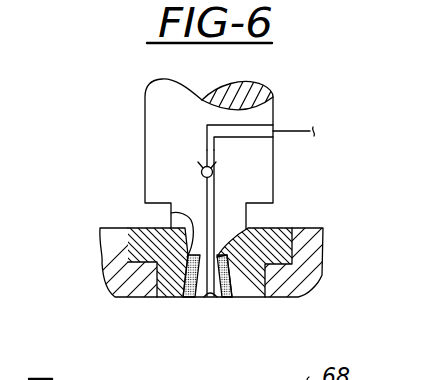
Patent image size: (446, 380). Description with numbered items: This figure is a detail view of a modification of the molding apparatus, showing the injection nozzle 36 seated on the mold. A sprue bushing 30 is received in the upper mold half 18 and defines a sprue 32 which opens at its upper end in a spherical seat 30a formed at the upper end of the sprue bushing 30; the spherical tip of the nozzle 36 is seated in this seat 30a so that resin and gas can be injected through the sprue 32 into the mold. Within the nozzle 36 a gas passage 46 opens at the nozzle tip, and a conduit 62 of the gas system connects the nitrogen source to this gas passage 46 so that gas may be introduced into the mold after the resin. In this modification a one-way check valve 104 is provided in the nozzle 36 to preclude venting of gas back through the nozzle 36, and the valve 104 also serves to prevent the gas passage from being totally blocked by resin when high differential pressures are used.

The upper mold half 18 is at (102, 273).
The sprue bushing 30 is at (272, 224).
The spherical seat 30a is at (190, 225).
The sprue 32 is at (207, 298).
The injection nozzle 36 is at (147, 178).
The gas passage 46 is at (213, 208).
The conduit 62 is at (301, 130).
The one-way check valve 104 is at (202, 168).